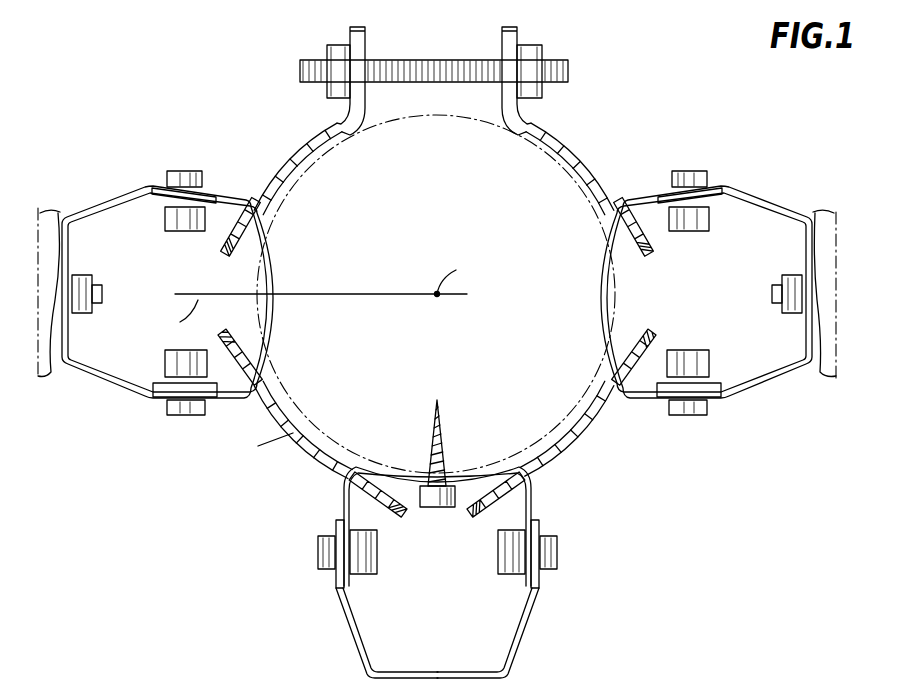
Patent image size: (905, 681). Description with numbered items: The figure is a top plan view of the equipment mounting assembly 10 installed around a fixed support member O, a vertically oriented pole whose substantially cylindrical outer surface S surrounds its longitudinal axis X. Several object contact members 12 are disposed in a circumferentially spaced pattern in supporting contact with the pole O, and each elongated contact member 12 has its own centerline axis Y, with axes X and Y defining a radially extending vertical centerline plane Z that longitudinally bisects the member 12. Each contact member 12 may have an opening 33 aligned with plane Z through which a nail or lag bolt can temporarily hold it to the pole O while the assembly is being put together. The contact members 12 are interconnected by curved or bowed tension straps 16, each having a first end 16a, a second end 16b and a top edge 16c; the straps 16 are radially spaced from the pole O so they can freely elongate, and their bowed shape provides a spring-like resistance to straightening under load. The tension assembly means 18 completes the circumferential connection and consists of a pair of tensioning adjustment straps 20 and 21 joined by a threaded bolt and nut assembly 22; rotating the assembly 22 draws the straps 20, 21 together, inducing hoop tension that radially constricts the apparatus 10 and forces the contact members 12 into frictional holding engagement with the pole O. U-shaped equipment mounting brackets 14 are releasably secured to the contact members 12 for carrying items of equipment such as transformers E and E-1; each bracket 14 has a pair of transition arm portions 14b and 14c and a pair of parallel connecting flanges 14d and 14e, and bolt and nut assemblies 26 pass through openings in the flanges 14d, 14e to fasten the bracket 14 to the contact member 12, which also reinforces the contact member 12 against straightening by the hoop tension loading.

The equipment mounting assembly 10 is at (423, 539).
The object contact member 12 is at (627, 400).
The equipment mounting bracket 14 is at (107, 388).
The transition arm portion 14b is at (352, 638).
The transition arm portion 14c is at (528, 632).
The connecting flange 14d is at (336, 580).
The connecting flange 14e is at (541, 522).
The tension strap 16 is at (304, 447).
The first longitudinal end 16a is at (404, 513).
The second end 16b is at (250, 318).
The top edge 16c is at (272, 176).
The tension assembly means 18 is at (427, 79).
The tensioning adjustment strap 20 is at (366, 44).
The tensioning adjustment strap 21 is at (519, 44).
The threaded bolt and nut assembly 22 is at (570, 70).
The bolt and nut assembly 26 is at (186, 420).
The opening 33 is at (445, 481).
The fixed support member O is at (314, 142).
The longitudinal axis X is at (453, 276).
The centerline longitudinal axis Y is at (183, 319).
The centerline plane Z is at (316, 296).
The cylindrical outer surface S is at (265, 448).
The equipment E is at (830, 376).
The equipment E-1 is at (48, 382).